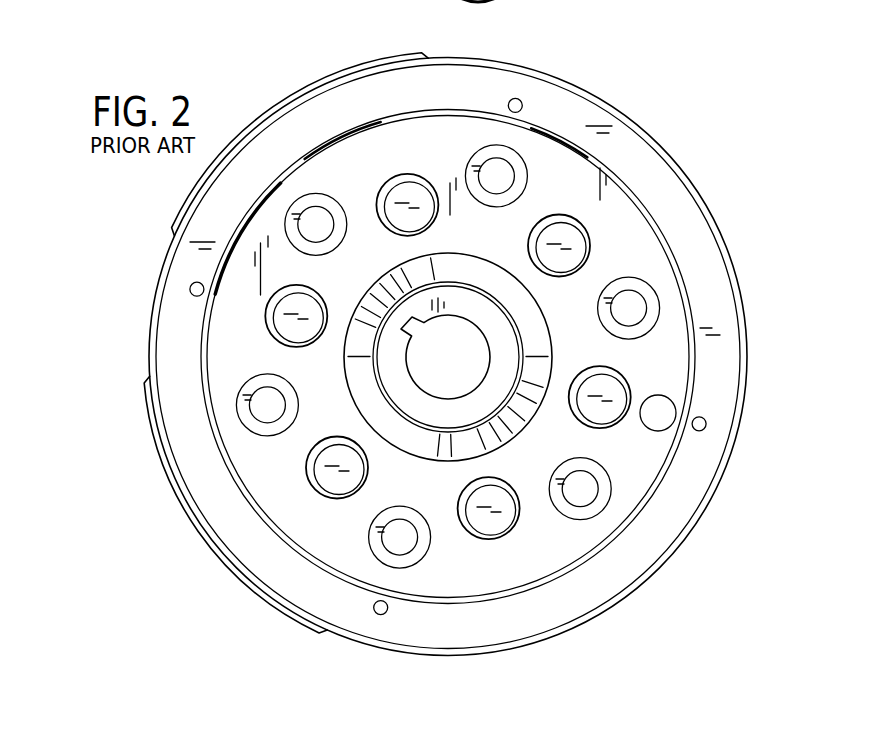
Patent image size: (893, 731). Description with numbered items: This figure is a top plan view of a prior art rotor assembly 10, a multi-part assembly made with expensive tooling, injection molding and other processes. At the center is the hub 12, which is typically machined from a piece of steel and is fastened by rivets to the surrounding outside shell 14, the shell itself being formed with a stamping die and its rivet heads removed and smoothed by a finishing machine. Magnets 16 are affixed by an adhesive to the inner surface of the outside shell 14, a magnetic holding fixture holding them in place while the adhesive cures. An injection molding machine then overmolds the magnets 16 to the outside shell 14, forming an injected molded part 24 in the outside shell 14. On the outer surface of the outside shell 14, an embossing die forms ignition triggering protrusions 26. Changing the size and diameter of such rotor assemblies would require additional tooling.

The prior art rotor assembly 10 is at (108, 293).
The hub 12 is at (637, 462).
The outside shell 14 is at (703, 202).
The magnets 16 is at (347, 7).
The injected molded part 24 is at (710, 298).
The ignition triggering protrusions 26 is at (272, 104).